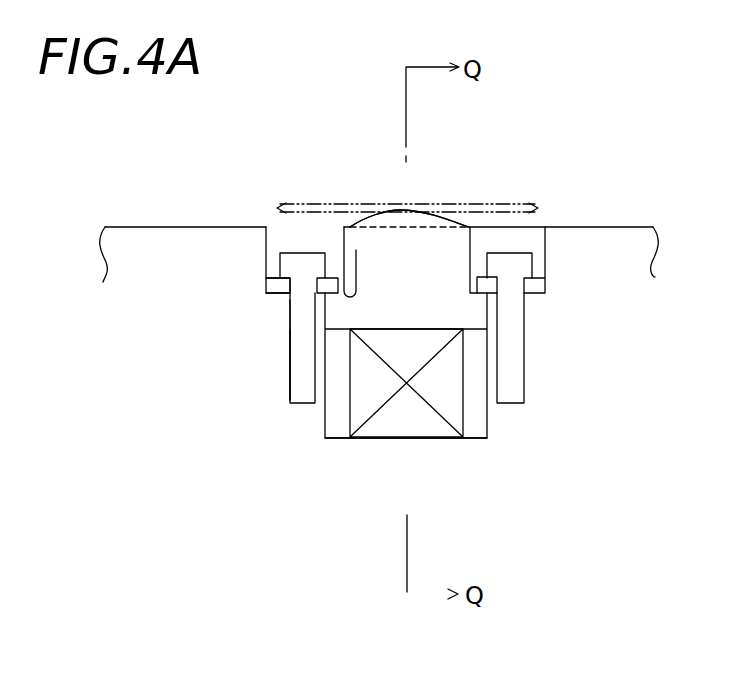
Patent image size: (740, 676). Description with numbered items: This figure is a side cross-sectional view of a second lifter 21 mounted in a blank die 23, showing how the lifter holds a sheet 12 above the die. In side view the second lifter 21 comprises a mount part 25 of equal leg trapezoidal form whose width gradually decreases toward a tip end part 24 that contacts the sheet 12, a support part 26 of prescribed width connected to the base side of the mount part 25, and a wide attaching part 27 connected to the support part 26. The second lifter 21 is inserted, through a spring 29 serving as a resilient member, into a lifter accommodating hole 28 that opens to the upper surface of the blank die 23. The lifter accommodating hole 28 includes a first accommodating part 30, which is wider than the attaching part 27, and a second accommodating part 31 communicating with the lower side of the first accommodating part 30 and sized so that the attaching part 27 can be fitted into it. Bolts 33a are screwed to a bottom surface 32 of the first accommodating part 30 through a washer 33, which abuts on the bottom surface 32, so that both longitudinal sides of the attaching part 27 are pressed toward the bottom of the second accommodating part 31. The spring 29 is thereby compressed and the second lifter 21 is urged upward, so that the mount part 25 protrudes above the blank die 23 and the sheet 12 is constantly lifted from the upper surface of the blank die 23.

The sheet 12 is at (528, 207).
The second lifter 21 is at (430, 172).
The blank die 23 is at (180, 247).
The tip end part 24 is at (405, 208).
The mount part 25 is at (425, 220).
The support part 26 is at (417, 257).
The attaching part 27 is at (475, 317).
The lifter accommodating hole 28 is at (175, 305).
The spring 29 is at (362, 402).
The first accommodating part 30 is at (262, 279).
The second accommodating part 31 is at (330, 355).
The bottom surface 32 is at (353, 250).
The washer 33 is at (275, 283).
The bolt 33a is at (303, 393).